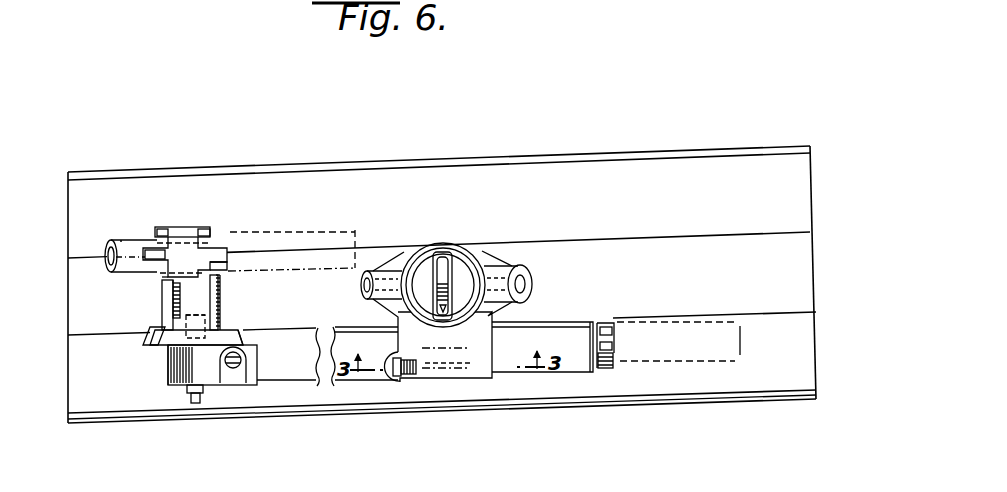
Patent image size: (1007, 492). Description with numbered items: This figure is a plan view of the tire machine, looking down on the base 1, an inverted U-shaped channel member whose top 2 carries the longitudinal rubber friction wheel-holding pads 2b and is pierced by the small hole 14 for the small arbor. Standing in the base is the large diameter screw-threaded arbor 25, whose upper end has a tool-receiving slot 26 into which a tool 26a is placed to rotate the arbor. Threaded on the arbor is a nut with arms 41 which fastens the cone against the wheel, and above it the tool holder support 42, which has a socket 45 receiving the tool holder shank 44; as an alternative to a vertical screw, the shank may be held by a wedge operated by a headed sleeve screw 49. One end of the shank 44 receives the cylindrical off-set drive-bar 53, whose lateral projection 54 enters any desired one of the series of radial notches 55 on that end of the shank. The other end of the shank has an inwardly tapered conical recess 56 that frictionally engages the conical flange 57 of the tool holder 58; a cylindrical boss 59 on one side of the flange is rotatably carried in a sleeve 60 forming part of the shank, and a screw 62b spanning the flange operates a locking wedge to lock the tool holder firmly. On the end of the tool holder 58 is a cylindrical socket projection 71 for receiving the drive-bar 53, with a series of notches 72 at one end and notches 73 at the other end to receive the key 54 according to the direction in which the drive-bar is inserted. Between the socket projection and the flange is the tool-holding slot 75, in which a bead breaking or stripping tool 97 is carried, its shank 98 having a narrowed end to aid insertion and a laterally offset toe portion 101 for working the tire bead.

The base 1 is at (772, 141).
The top 2 is at (805, 265).
The longitudinal rubber friction wheel-holding pads 2b is at (630, 172).
The small hole 14 is at (533, 277).
The large diameter screw-threaded arbor 25 is at (422, 268).
The tool-receiving slot 26 is at (440, 252).
The tool 26a is at (446, 318).
The arms 41 is at (363, 282).
The tool holder support 42 is at (462, 253).
The tool holder shank 44 is at (325, 326).
The socket 45 is at (472, 380).
The headed sleeve screw 49 is at (396, 364).
The drive-bar 53 is at (118, 248).
The lateral projection 54 is at (153, 255).
The radial notches 55 is at (613, 365).
The inwardly tapered conical surface or recess 56 is at (244, 338).
The conical flange 57 is at (150, 332).
The tool holder 58 is at (200, 302).
The cylindrical boss 59 is at (195, 404).
The sleeve 60 is at (168, 380).
The screw 62b is at (233, 370).
The cylindrical socket projection 71 is at (167, 240).
The notches 72 is at (209, 255).
The notches 73 is at (162, 280).
The tool-holding slot 75 is at (170, 368).
The bead breaking or stripping tool 97 is at (160, 293).
The shank 98 is at (166, 302).
The laterally offset toe portion 101 is at (220, 313).